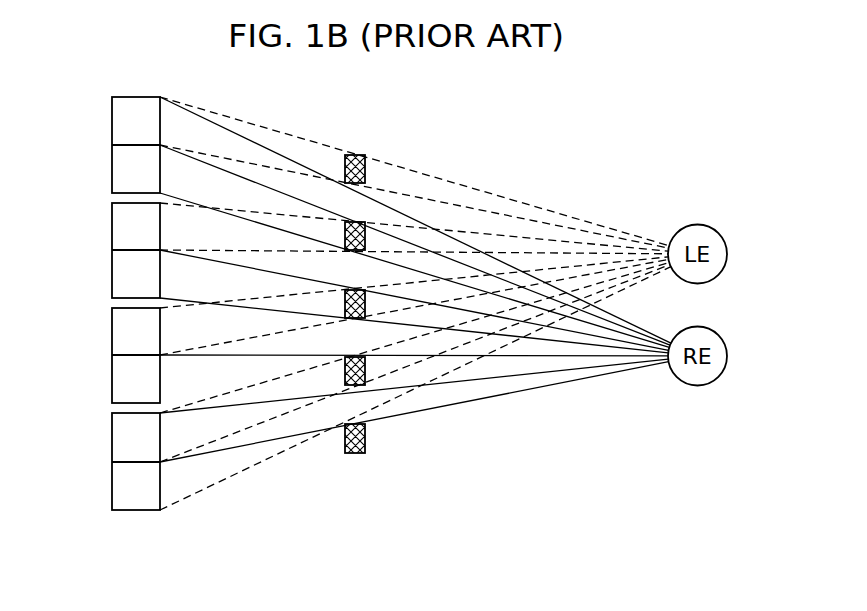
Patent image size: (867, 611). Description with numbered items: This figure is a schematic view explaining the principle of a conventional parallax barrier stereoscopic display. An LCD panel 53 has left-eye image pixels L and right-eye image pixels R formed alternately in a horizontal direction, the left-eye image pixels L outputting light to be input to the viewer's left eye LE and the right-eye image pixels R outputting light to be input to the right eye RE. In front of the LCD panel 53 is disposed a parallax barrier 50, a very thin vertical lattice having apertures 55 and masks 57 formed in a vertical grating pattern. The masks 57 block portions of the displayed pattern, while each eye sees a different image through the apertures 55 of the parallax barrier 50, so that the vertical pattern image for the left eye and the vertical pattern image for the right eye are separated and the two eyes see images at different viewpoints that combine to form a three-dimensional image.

The parallax barrier 50 is at (365, 343).
The LCD panel 53 is at (140, 510).
The apertures 55 is at (350, 408).
The masks 57 is at (345, 442).